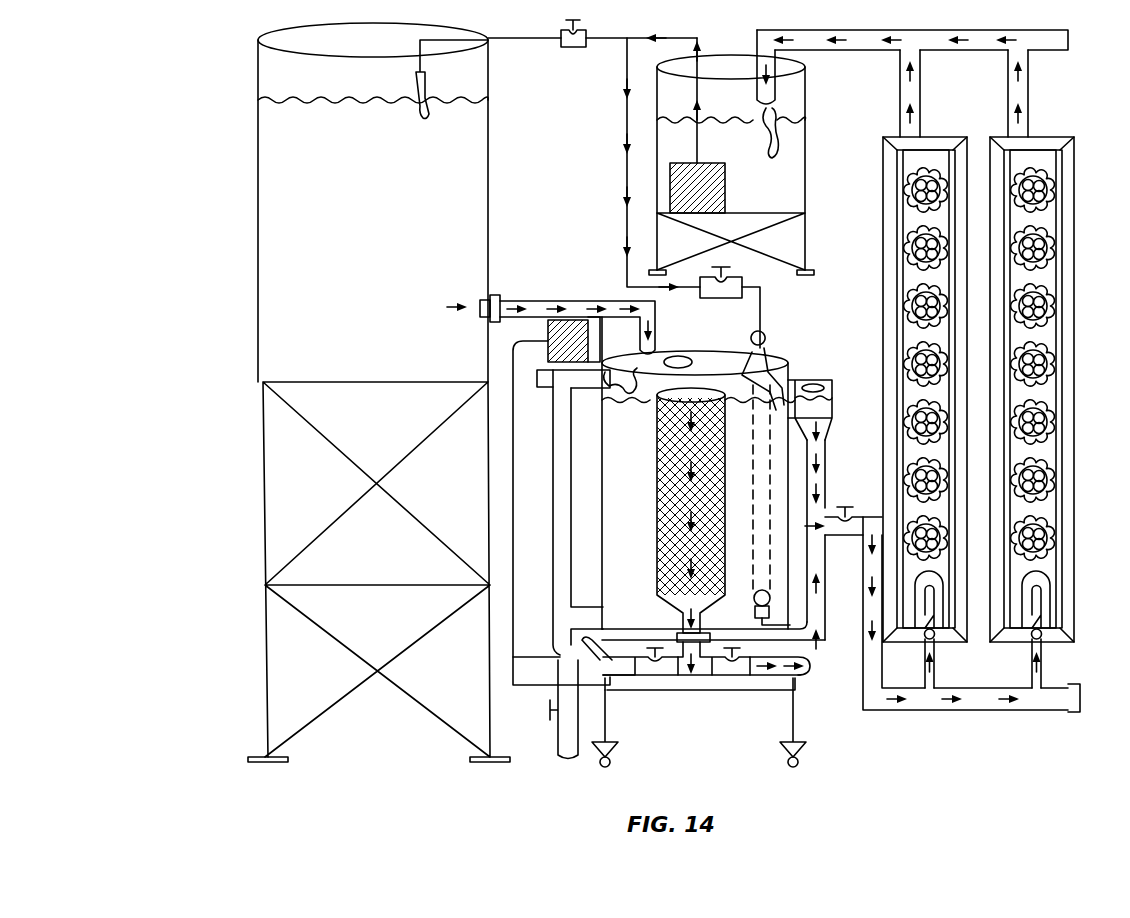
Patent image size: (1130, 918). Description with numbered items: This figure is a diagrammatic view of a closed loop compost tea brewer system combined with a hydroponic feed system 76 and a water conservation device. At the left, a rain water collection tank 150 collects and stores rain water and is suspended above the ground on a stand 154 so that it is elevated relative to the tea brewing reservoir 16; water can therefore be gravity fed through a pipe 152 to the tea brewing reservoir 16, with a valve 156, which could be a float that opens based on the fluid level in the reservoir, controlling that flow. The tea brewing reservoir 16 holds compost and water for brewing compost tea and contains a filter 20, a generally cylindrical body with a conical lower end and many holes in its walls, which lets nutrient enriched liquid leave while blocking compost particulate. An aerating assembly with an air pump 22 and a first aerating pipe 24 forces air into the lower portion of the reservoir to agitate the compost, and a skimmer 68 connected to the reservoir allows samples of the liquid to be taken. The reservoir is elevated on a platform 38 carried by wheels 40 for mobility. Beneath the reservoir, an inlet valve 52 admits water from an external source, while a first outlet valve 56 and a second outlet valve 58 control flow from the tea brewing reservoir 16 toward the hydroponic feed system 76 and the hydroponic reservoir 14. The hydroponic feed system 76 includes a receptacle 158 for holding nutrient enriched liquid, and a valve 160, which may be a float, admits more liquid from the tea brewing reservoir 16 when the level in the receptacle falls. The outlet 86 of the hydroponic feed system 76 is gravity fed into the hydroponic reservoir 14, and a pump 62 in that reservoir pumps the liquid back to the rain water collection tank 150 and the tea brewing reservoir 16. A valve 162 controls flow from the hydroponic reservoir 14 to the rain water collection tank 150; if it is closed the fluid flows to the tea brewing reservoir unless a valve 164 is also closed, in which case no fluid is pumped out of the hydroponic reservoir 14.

The hydroponic reservoir 14 is at (805, 152).
The tea brewing reservoir 16 is at (602, 460).
The filter 20 is at (657, 510).
The air pump 22 is at (548, 332).
The first aerating pipe 24 is at (553, 518).
The platform 38 is at (793, 712).
The wheels 40 is at (610, 763).
The inlet valve 52 is at (655, 680).
The first outlet valve 56 is at (733, 680).
The second outlet valve 58 is at (848, 538).
The pump 62 is at (700, 218).
The skimmer 68 is at (832, 395).
The hydroponic feed system 76 is at (874, 270).
The outlet 86 is at (1008, 93).
The rain water collection tank 150 is at (488, 193).
The pipe 152 is at (538, 301).
The stand 154 is at (263, 490).
The valve 156 is at (690, 358).
The receptacle 158 is at (1015, 620).
The valve 160 is at (925, 600).
The valve 162 is at (573, 48).
The valve 164 is at (728, 300).